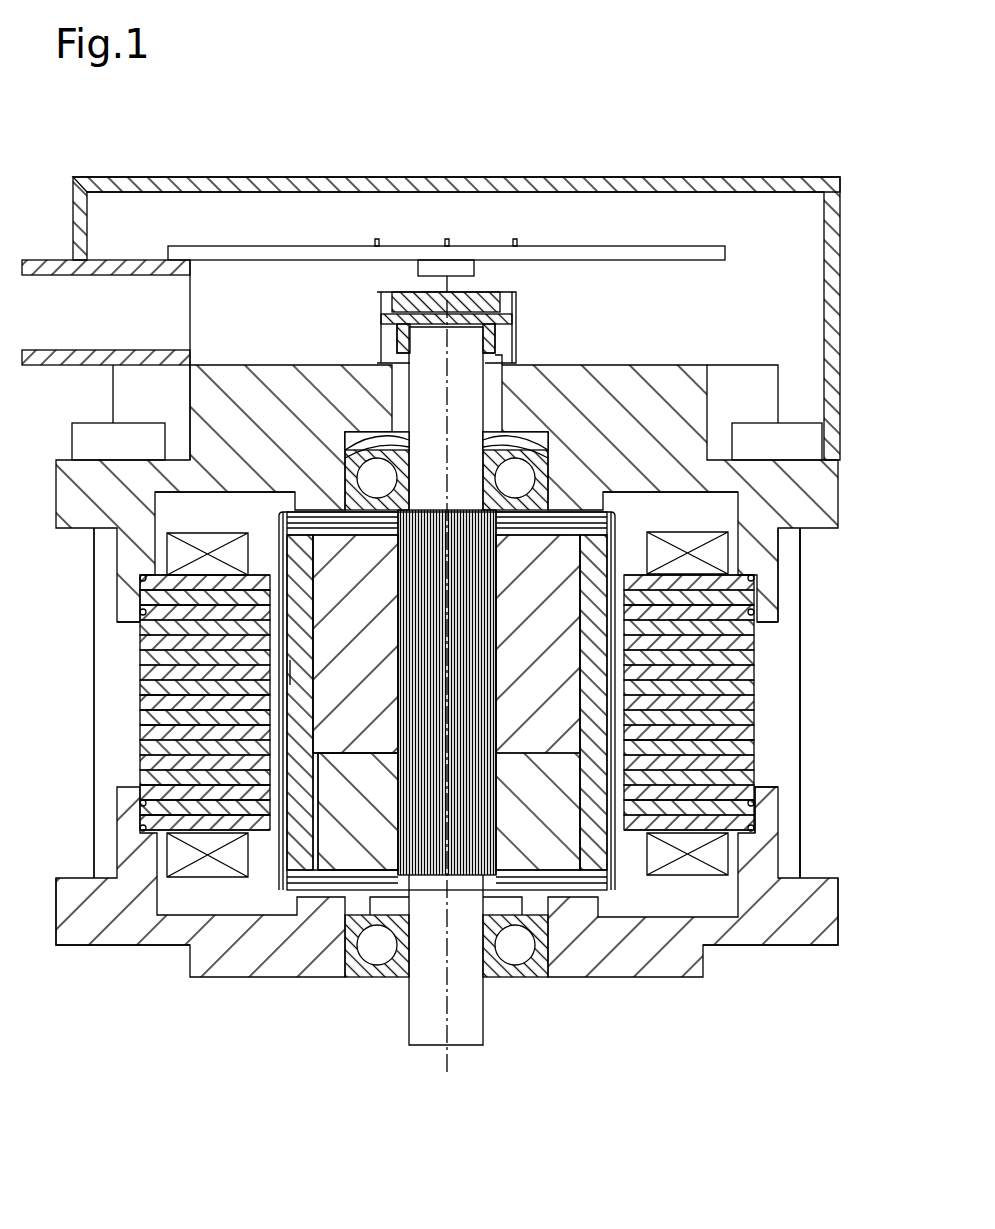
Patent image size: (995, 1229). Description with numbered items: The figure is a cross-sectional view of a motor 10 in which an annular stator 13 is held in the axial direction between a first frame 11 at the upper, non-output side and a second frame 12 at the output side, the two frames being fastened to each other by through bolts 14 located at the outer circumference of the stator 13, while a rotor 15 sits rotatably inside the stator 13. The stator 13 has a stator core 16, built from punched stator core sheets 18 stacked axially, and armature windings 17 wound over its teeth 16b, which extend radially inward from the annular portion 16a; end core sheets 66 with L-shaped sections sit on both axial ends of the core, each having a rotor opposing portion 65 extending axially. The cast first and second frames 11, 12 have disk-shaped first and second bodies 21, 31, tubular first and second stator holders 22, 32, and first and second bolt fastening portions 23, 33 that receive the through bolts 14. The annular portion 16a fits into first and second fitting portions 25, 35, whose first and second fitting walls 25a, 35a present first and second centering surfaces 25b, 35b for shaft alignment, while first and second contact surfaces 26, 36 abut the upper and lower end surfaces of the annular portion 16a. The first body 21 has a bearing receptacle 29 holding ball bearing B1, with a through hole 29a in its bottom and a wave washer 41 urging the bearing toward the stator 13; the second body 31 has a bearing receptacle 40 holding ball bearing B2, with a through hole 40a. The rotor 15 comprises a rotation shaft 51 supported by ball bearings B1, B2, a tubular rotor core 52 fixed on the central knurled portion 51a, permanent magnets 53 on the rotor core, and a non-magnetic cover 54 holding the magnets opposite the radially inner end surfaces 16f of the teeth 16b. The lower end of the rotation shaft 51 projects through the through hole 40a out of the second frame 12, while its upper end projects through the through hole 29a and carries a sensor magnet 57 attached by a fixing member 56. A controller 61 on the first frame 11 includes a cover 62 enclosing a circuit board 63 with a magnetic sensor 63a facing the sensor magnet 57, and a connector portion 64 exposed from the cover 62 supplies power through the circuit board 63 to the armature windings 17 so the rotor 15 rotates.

The motor 10 is at (752, 142).
The first frame 11 is at (247, 365).
The second frame 12 is at (290, 978).
The stator 13 is at (758, 666).
The through bolt 14 is at (93, 752).
The rotor 15 is at (612, 513).
The stator core 16 is at (142, 676).
The annular portion 16a is at (748, 748).
The teeth 16b is at (300, 642).
The radially inner end surfaces 16f is at (290, 673).
The armature windings 17 is at (215, 530).
The stator core sheets 18 is at (142, 732).
The first body 21 is at (690, 368).
The first stator holder 22 is at (790, 546).
The first bolt fastening portion 23 is at (95, 458).
The first fitting portion 25 is at (142, 598).
The first fitting wall 25a is at (128, 652).
The first centering surface 25b is at (130, 615).
The first contact surface 26 is at (142, 578).
The bearing receptacle 29 is at (358, 533).
The through hole 29a is at (500, 368).
The second body 31 is at (612, 977).
The second stator holder 32 is at (790, 852).
The second bolt fastening portion 33 is at (82, 940).
The second fitting portion 35 is at (130, 818).
The second fitting wall 35a is at (130, 787).
The second centering surface 35b is at (130, 802).
The second contact surface 36 is at (130, 827).
The bearing receptacle 40 is at (532, 977).
The through hole 40a is at (358, 876).
The wave washer 41 is at (555, 445).
The rotation shaft 51 is at (415, 383).
The knurled portion 51a is at (497, 662).
The rotor core 52 is at (345, 520).
The permanent magnets 53 is at (308, 772).
The non-magnetic cover 54 is at (300, 742).
The fixing member 56 is at (377, 305).
The sensor magnet 57 is at (498, 298).
The controller 61 is at (570, 180).
The cover 62 is at (418, 177).
The circuit board 63 is at (680, 247).
The magnetic sensor 63a is at (455, 265).
The connector portion 64 is at (45, 260).
The rotor opposing portion 65 is at (283, 530).
The end core sheets 66 is at (228, 540).
The ball bearing B1 is at (400, 448).
The ball bearing B2 is at (375, 978).